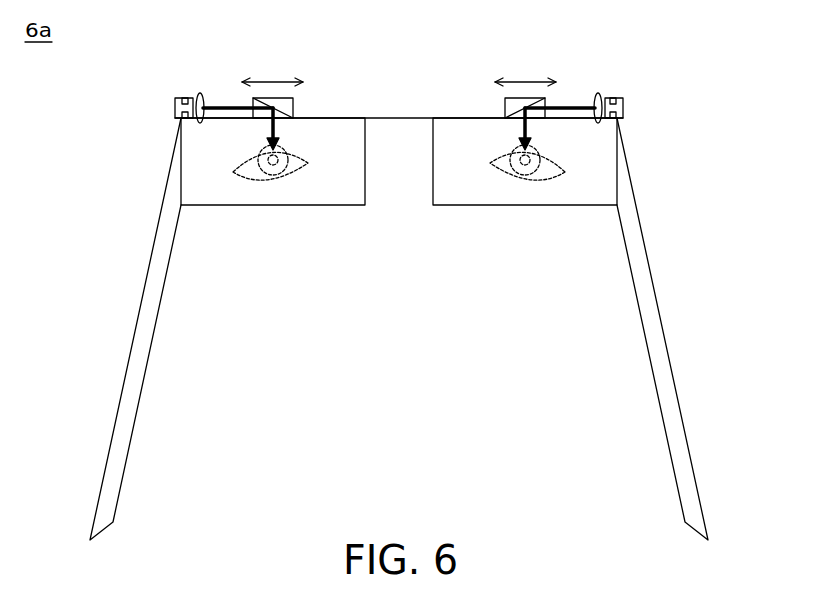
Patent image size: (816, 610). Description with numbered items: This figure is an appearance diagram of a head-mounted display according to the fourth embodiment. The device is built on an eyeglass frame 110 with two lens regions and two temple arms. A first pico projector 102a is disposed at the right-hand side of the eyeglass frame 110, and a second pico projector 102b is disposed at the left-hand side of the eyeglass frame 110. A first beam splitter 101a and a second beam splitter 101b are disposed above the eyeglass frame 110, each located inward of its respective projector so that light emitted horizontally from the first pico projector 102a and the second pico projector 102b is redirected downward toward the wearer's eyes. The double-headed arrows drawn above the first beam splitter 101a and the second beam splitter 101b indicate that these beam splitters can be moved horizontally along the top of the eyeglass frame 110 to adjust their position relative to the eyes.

The first beam splitter 101a is at (505, 107).
The second beam splitter 101b is at (293, 107).
The first pico projector 102a is at (620, 97).
The second pico projector 102b is at (178, 97).
The eyeglass frame 110 is at (652, 318).